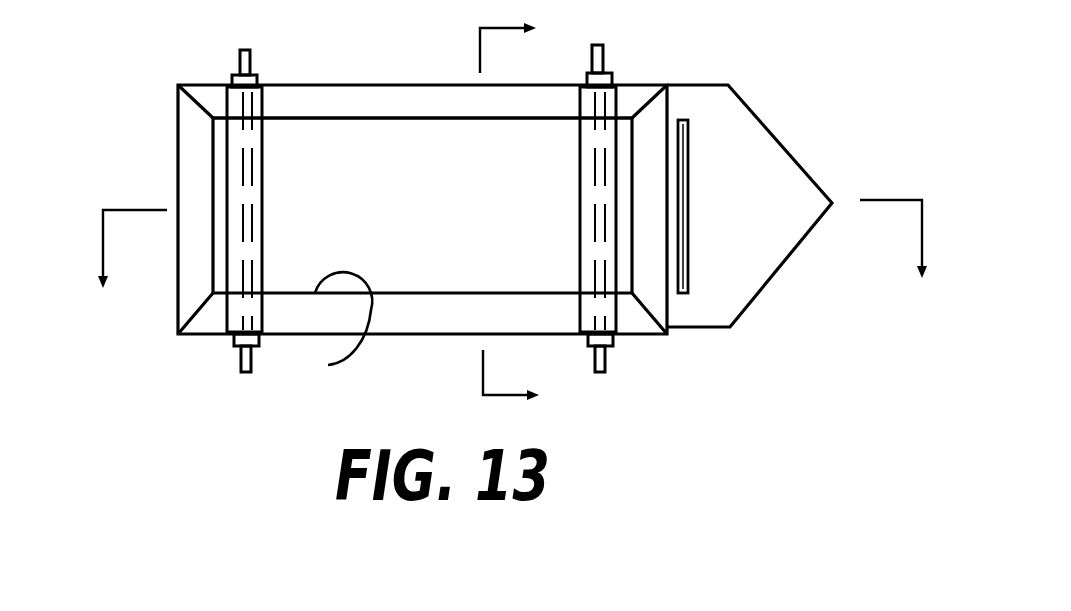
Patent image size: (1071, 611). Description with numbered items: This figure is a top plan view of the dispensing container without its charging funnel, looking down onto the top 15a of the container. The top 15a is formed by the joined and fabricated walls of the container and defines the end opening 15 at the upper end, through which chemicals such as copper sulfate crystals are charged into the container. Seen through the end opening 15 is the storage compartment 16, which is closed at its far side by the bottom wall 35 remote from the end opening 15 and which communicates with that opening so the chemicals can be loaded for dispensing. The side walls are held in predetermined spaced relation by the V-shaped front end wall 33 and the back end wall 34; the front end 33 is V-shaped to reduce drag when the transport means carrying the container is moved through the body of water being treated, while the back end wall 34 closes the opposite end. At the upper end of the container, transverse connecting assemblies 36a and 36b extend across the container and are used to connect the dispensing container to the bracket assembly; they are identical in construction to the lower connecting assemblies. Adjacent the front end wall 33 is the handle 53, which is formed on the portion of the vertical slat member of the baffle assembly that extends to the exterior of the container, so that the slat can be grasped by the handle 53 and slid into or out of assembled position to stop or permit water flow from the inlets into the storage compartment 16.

The end opening 15 is at (517, 218).
The top 15a is at (320, 326).
The storage compartment 16 is at (417, 228).
The V-shaped front end wall 33 is at (765, 167).
The back end wall 34 is at (197, 283).
The bottom wall 35 is at (460, 157).
The transverse connecting assembly 36a is at (270, 186).
The transverse connecting assembly 36b is at (574, 161).
The handle 53 is at (687, 188).